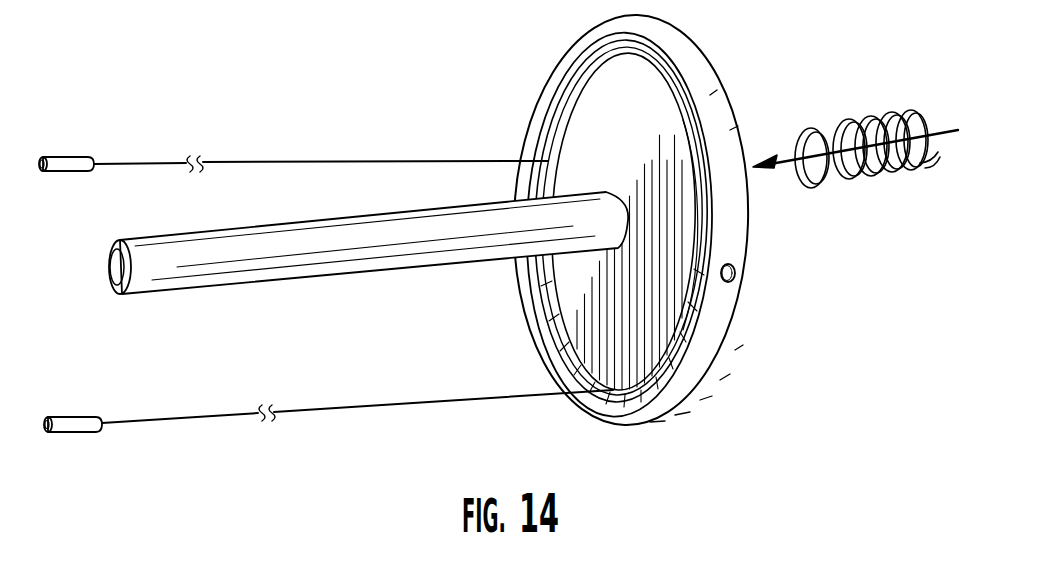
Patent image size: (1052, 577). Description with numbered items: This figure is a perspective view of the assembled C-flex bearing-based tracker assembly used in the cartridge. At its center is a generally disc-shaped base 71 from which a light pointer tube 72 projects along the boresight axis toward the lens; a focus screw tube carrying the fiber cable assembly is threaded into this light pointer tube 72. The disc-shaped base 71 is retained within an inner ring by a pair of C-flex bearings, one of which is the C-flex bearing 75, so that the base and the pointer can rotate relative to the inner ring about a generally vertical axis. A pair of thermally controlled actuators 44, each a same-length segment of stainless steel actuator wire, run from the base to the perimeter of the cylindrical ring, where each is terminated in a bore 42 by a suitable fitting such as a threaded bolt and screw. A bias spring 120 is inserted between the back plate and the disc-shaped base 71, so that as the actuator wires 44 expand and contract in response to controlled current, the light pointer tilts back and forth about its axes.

The bore 42 is at (62, 157).
The thermally controlled actuator 44 is at (352, 160).
The disc-shaped base 71 is at (548, 279).
The light pointer tube 72 is at (243, 283).
The C-flex bearing 75 is at (736, 108).
The bias spring 120 is at (837, 125).